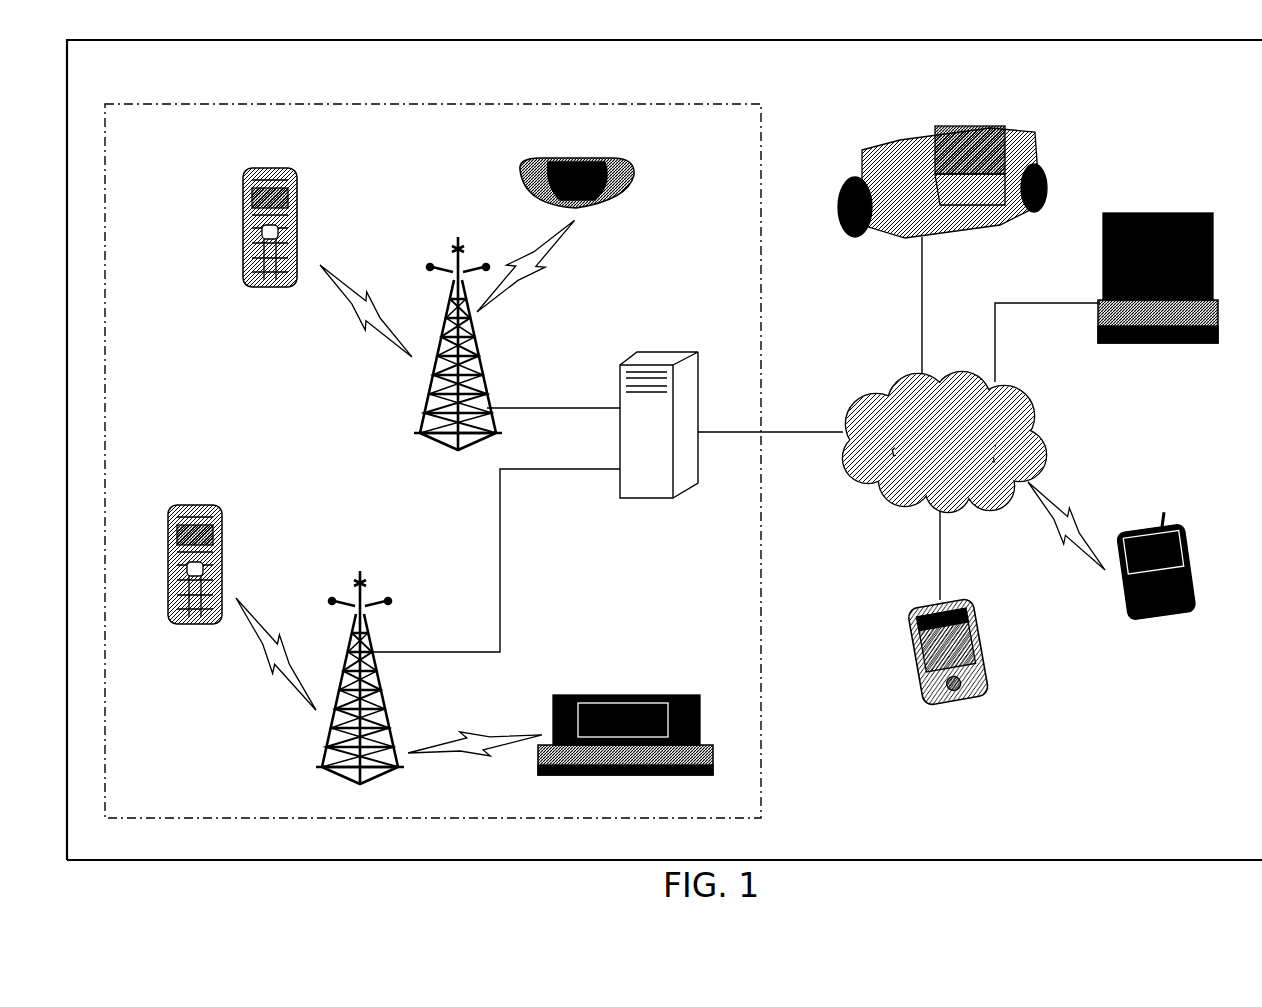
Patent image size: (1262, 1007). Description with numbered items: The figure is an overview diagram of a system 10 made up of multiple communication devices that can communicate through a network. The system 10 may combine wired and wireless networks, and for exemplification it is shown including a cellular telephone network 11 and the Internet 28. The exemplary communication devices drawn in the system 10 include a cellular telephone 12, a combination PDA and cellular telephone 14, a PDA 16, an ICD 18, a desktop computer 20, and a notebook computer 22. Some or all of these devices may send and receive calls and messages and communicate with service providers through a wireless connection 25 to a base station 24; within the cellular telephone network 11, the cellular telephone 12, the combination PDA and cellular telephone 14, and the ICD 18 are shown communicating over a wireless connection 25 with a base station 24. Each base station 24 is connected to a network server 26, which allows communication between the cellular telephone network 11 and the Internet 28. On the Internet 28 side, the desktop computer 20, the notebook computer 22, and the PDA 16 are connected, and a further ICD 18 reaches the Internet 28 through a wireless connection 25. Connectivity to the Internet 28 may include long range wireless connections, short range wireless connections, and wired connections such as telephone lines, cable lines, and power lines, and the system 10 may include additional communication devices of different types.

The system 10 is at (664, 450).
The cellular telephone network 11 is at (433, 461).
The cellular telephone 12 is at (245, 233).
The combination PDA and cellular telephone 14 is at (618, 698).
The PDA 16 is at (983, 657).
The ICD 18 is at (636, 188).
The desktop computer 20 is at (862, 165).
The notebook computer 22 is at (1172, 343).
The base station 24 is at (430, 420).
The wireless connection 25 is at (271, 614).
The network server 26 is at (698, 483).
The Internet 28 is at (944, 442).